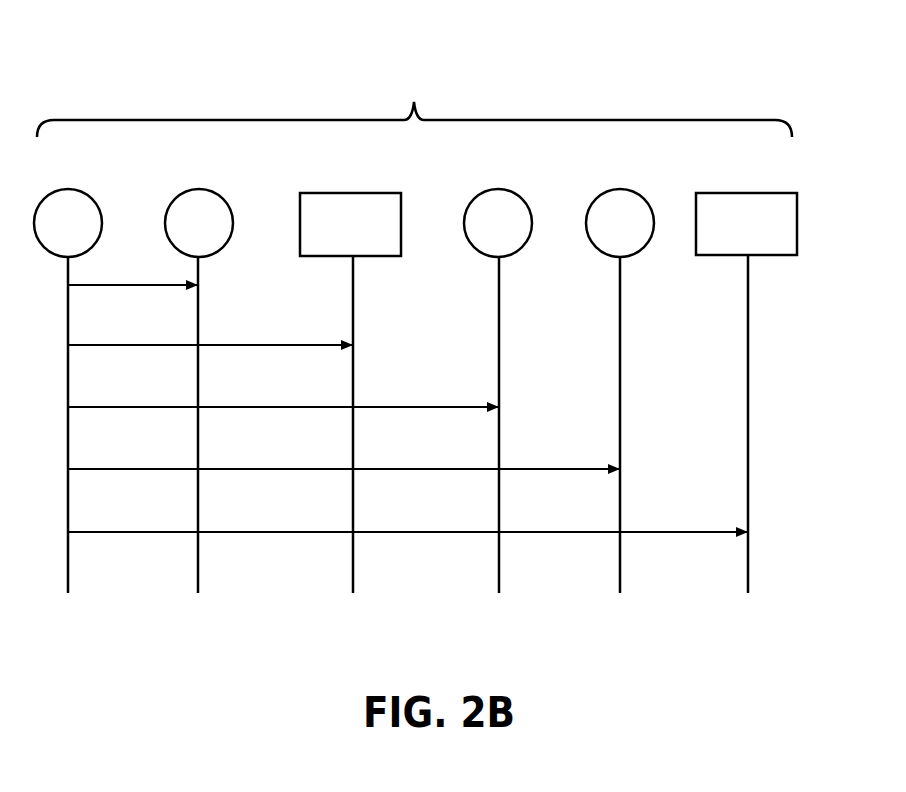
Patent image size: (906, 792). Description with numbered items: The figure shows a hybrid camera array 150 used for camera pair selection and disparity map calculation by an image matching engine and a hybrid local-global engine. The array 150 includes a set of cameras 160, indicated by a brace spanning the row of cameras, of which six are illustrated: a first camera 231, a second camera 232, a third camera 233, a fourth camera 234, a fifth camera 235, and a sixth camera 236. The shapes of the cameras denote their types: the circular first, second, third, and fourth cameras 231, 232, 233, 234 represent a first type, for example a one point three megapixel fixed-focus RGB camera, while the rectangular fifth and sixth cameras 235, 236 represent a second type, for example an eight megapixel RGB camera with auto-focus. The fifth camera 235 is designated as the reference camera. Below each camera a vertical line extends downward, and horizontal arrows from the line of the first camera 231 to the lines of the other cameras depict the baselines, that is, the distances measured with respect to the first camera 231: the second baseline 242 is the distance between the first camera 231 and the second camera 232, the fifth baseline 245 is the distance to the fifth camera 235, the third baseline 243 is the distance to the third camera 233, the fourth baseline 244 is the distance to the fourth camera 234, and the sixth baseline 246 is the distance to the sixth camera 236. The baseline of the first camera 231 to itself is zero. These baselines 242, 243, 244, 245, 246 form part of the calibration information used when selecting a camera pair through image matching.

The hybrid camera array 150 is at (118, 62).
The cameras 1-N 160 is at (414, 106).
The camera C1 231 is at (76, 189).
The camera C2 232 is at (207, 189).
The camera C3 233 is at (506, 189).
The camera C4 234 is at (628, 189).
The camera C5 235 is at (367, 193).
The camera C6 236 is at (716, 193).
The baseline b2 242 is at (168, 287).
The baseline b3 243 is at (317, 409).
The baseline b4 244 is at (378, 471).
The baseline b5 245 is at (244, 347).
The baseline b6 246 is at (441, 534).